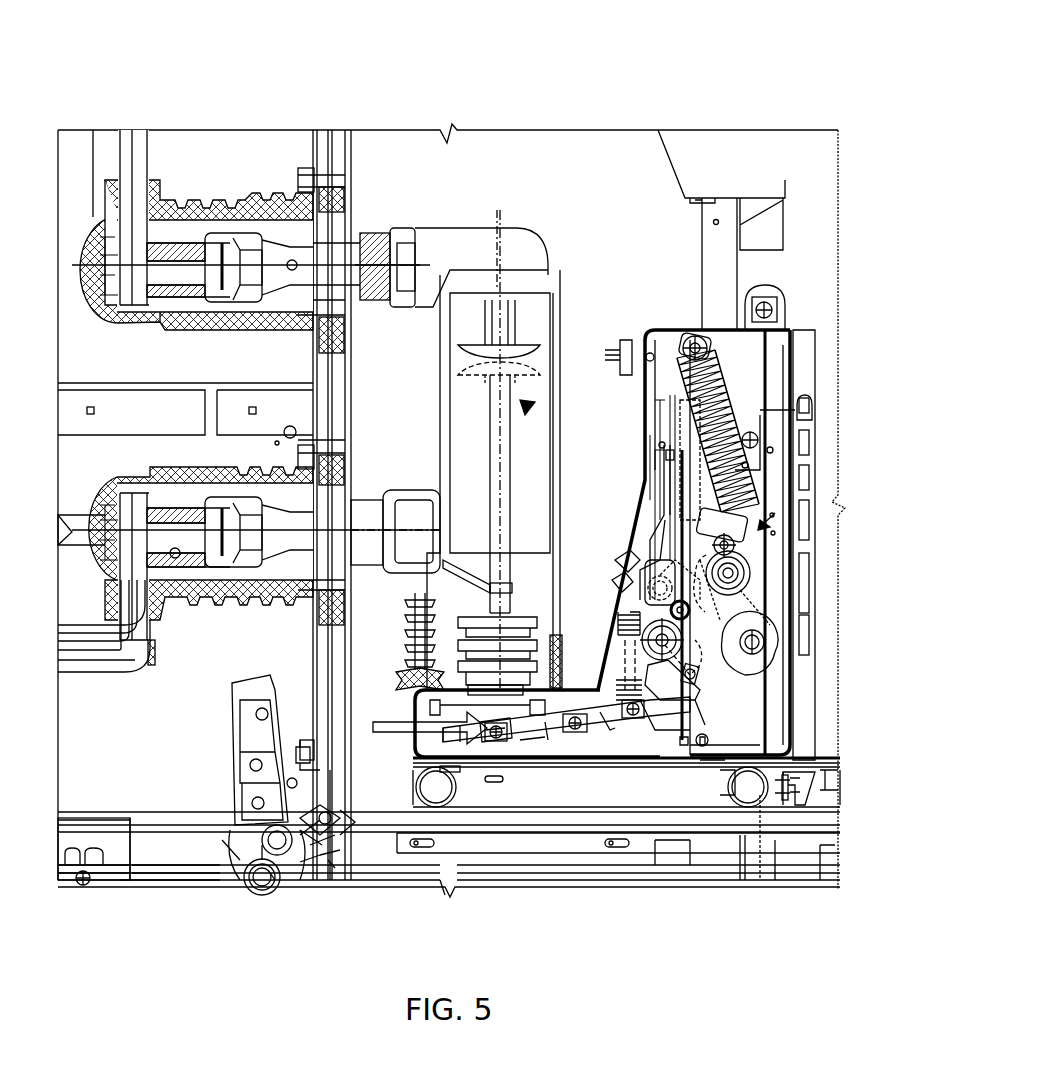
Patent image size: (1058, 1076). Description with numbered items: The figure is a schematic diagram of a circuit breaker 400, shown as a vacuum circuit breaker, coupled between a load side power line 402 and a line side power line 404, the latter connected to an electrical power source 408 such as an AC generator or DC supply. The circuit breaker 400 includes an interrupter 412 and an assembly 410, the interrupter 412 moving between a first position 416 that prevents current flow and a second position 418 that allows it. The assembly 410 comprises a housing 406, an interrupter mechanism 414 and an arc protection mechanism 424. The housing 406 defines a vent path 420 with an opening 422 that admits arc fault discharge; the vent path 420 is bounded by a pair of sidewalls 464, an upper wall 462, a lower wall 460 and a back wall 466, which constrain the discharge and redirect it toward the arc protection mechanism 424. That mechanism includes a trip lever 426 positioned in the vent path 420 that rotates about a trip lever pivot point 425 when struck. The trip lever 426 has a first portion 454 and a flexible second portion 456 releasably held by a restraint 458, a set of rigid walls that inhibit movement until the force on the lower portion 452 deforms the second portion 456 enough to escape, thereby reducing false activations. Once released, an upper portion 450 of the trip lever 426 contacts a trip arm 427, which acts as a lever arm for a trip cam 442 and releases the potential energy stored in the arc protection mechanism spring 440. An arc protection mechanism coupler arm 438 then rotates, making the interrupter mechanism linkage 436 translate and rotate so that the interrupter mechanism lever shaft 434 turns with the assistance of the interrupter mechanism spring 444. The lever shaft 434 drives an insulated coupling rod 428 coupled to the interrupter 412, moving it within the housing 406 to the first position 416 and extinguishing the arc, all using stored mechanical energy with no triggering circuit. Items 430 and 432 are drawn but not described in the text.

The circuit breaker 400 is at (790, 72).
The load side power line 402 is at (340, 255).
The line side power line 404 is at (290, 543).
The housing 406 is at (645, 330).
The electrical power source 408 is at (90, 672).
The assembly 410 is at (585, 127).
The interrupter 412 is at (545, 368).
The interrupter mechanism 414 is at (590, 760).
The first position 416 is at (542, 352).
The second position 418 is at (525, 412).
The vent path 420 is at (395, 718).
The opening 422 is at (410, 712).
The arc protection mechanism 424 is at (775, 520).
The trip lever pivot point 425 is at (765, 640).
The trip lever 426 is at (690, 610).
The trip arm 427 is at (660, 478).
The insulated coupling rod 428 is at (505, 530).
The vacuum interrupter 430 is at (428, 508).
The upper conductor elbow 432 is at (430, 255).
The interrupter mechanism lever shaft 434 is at (540, 745).
The interrupter mechanism linkage 436 is at (715, 758).
The arc protection mechanism coupler arm 438 is at (680, 645).
The arc protection mechanism spring 440 is at (735, 420).
The trip cam 442 is at (645, 590).
The interrupter mechanism spring 444 is at (590, 665).
The upper portion 450 is at (740, 572).
The lower portion 452 is at (695, 685).
The first portion 454 is at (720, 505).
The second portion 456 is at (805, 800).
The restraint 458 is at (702, 760).
The lower wall 460 is at (490, 760).
The upper wall 462 is at (578, 695).
The sidewalls 464 is at (835, 785).
The back wall 466 is at (800, 380).